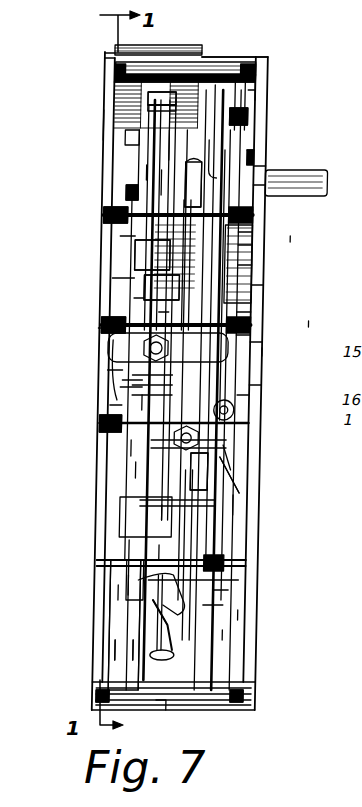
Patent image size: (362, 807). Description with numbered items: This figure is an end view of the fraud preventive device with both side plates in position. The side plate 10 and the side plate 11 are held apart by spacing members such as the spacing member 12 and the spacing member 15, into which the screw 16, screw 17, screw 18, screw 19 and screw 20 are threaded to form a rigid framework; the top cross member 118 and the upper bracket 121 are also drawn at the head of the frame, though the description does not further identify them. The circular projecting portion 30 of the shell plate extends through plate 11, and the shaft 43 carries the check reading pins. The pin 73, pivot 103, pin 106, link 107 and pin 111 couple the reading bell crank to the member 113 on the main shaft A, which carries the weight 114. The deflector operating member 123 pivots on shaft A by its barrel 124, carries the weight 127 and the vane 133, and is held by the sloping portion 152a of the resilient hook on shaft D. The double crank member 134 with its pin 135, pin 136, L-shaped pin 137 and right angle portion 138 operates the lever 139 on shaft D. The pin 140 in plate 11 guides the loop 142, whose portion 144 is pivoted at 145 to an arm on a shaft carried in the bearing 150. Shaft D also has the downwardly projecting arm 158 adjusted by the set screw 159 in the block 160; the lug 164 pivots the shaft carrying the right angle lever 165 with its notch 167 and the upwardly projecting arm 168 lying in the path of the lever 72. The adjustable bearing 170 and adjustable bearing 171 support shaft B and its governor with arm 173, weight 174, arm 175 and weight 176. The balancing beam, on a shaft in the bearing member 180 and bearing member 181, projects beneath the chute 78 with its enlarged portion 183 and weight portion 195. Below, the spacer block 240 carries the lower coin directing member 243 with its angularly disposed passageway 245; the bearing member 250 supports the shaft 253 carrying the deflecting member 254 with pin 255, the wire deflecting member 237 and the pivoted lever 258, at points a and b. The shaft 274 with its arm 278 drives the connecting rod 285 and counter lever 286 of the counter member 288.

The side plate 10 is at (108, 125).
The side plate 11 is at (262, 85).
The spacing member 12 is at (213, 58).
The spacing member 15 is at (180, 705).
The screw 16 is at (116, 68).
The screw 17 is at (262, 68).
The screw 18 is at (100, 700).
The screw 19 is at (252, 700).
The screw 20 is at (137, 585).
The circular projecting portion 30 is at (262, 158).
The shaft 43 is at (310, 172).
The lever 72 is at (250, 312).
The pin 73 is at (168, 294).
The chute 78 is at (115, 370).
The pivot 103 is at (260, 285).
The pin 106 is at (118, 278).
The link 107 is at (100, 215).
The pin 111 is at (130, 192).
The member 113 is at (150, 172).
The weight 114 is at (140, 298).
The cross member 118 is at (185, 70).
The bracket 121 is at (150, 98).
The deflector operating member 123 is at (170, 312).
The barrel 124 is at (182, 183).
The weight 127 is at (174, 160).
The plate or vane 133 is at (172, 515).
The double crank member 134 is at (250, 232).
The pin 135 is at (150, 108).
The pin 136 is at (300, 240).
The L-shaped pin 137 is at (262, 185).
The right angle portion 138 is at (258, 168).
The lever 139 is at (250, 245).
The pin 140 is at (245, 108).
The loop 142 is at (248, 138).
The portion 144 is at (255, 265).
The pivot 145 is at (250, 335).
The bearing 150 is at (168, 347).
The sloping portion 152a is at (130, 380).
The downwardly projecting arm 158 is at (265, 385).
The set screw 159 is at (258, 418).
The block 160 is at (255, 470).
The lug 164 is at (191, 471).
The right angle lever 165 is at (150, 402).
The notch 167 is at (118, 405).
The upwardly projecting arm 168 is at (258, 395).
The adjustable bearing 170 is at (320, 323).
The adjustable bearing 171 is at (100, 325).
The arm 173 is at (147, 255).
The weight 174 is at (170, 166).
The arm 175 is at (140, 448).
The weight 176 is at (255, 505).
The bearing member 180 is at (105, 426).
The bearing member 181 is at (258, 440).
The enlarged portion 183 is at (128, 387).
The weight portion 195 is at (145, 470).
The deflecting member 237 is at (130, 590).
The spacer block 240 is at (130, 648).
The lower coin directing member 243 is at (128, 500).
The angularly disposed passageway 245 is at (145, 660).
The bearing member 250 is at (140, 540).
The shaft 253 is at (135, 612).
The deflecting member 254 is at (170, 615).
The pin 255 is at (170, 550).
The pivoted lever 258 is at (230, 612).
The shaft 274 is at (115, 565).
The arm 278 is at (235, 598).
The connecting rod 285 is at (256, 122).
The counter lever 286 is at (262, 95).
The counter member 288 is at (140, 48).
The main shaft A is at (125, 236).
The shaft B is at (105, 328).
The shaft D is at (260, 342).
The point a is at (231, 632).
The point b is at (247, 612).